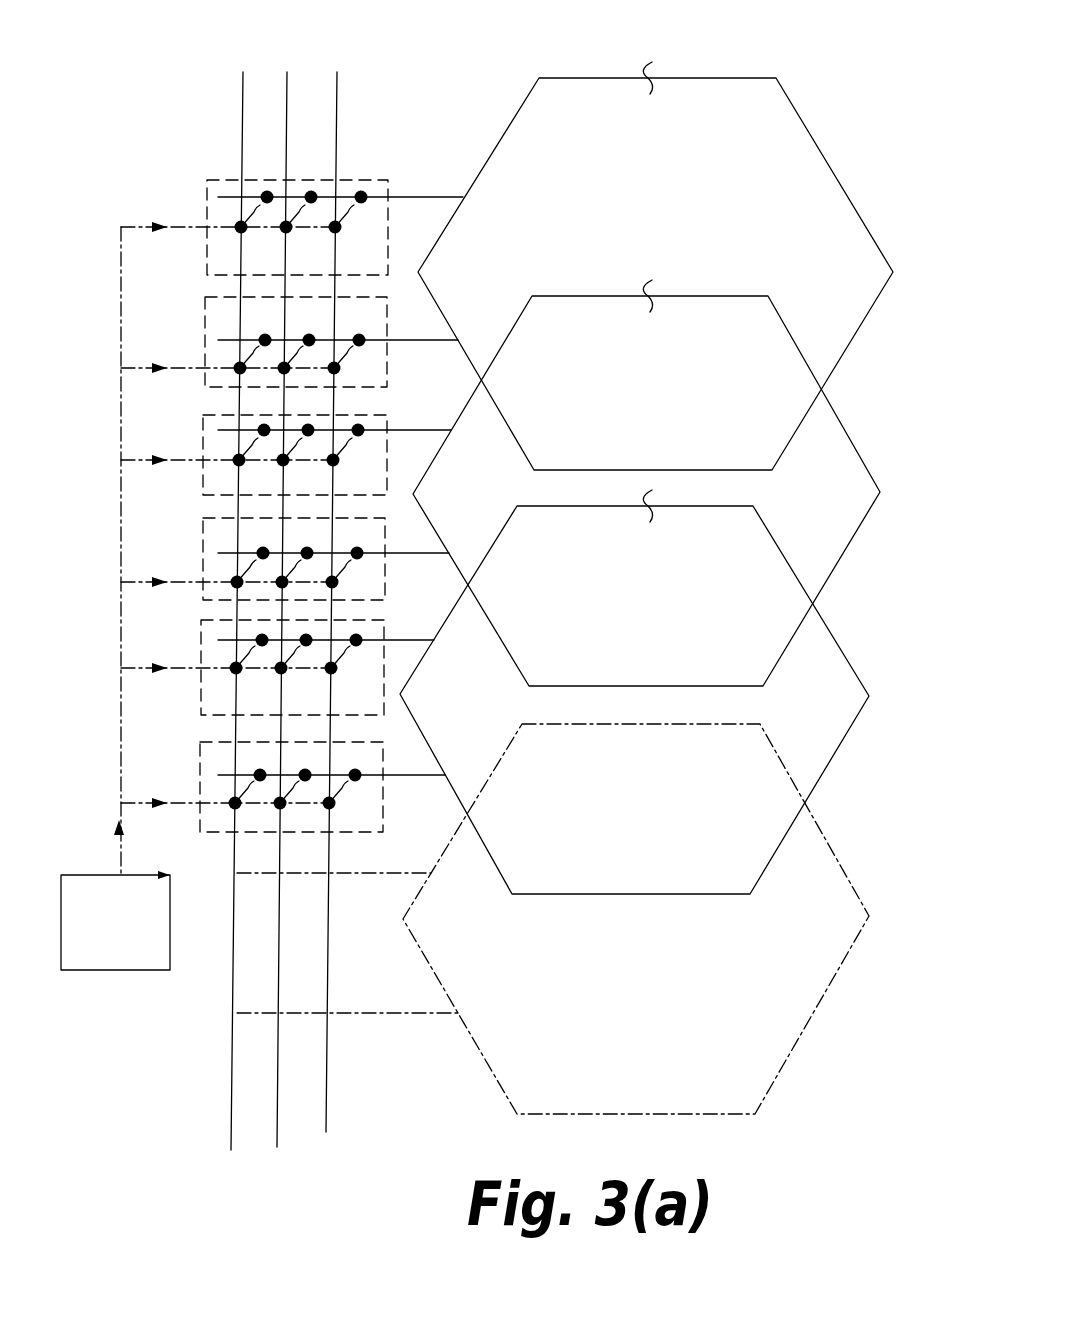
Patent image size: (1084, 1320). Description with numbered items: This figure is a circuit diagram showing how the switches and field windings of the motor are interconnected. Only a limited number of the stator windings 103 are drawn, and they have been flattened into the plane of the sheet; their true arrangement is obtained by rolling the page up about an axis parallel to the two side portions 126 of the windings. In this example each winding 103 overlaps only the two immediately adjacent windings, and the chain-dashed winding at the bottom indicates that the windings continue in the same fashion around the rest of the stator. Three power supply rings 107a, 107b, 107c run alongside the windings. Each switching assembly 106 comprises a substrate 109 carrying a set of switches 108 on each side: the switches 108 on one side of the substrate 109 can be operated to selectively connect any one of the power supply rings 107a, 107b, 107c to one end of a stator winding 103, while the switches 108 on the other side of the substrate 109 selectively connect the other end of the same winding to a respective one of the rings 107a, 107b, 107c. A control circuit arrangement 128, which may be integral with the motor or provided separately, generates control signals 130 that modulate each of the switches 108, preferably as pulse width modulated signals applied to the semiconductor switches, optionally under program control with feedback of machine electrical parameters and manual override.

The stator winding 103 is at (851, 204).
The switching assembly 106 is at (206, 298).
The power supply ring 107a is at (242, 133).
The power supply ring 107b is at (290, 128).
The power supply ring 107c is at (338, 148).
The switch 108 is at (247, 220).
The substrate 109 is at (217, 288).
The side portion 126 is at (690, 75).
The control circuit arrangement 128 is at (115, 920).
The control signal 130 is at (125, 225).